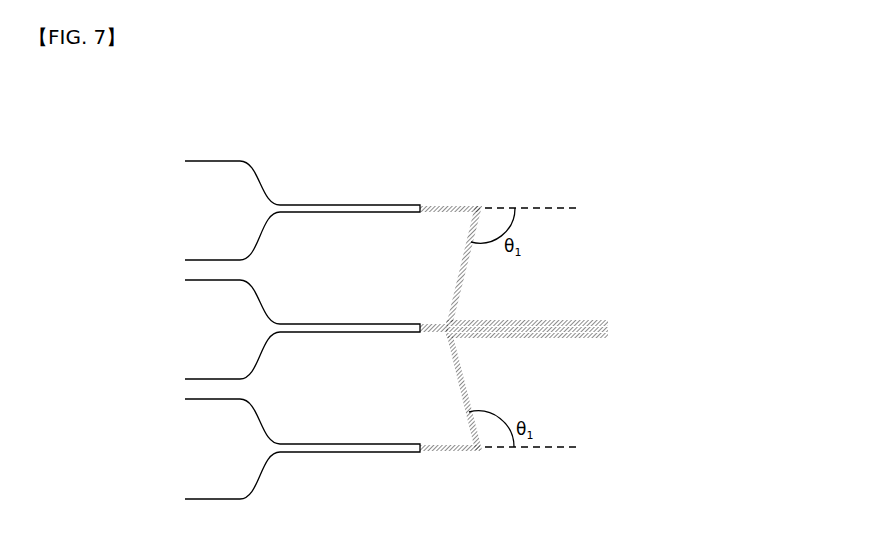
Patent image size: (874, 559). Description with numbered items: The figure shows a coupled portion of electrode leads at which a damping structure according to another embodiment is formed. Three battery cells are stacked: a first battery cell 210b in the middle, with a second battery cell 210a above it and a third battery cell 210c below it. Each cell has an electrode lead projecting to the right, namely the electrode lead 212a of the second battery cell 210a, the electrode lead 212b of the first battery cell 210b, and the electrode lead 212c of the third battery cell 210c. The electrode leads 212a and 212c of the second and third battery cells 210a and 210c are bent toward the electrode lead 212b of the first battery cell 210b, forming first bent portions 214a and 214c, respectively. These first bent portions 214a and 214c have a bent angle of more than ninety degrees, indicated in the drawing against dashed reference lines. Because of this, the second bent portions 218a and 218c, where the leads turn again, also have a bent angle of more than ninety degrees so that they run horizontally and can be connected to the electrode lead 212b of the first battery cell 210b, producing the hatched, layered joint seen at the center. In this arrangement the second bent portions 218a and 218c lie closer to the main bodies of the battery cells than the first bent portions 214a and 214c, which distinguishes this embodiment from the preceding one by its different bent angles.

The second battery cell 210a is at (215, 219).
The first battery cell 210b is at (210, 335).
The third battery cell 210c is at (208, 442).
The electrode lead of second battery cell 212a is at (571, 321).
The electrode lead of first battery cell 212b is at (603, 322).
The electrode lead of third battery cell 212c is at (593, 337).
The first bent portion 214a is at (483, 199).
The first bent portion 214c is at (489, 455).
The second bent portion 218a is at (458, 316).
The second bent portion 218c is at (461, 344).